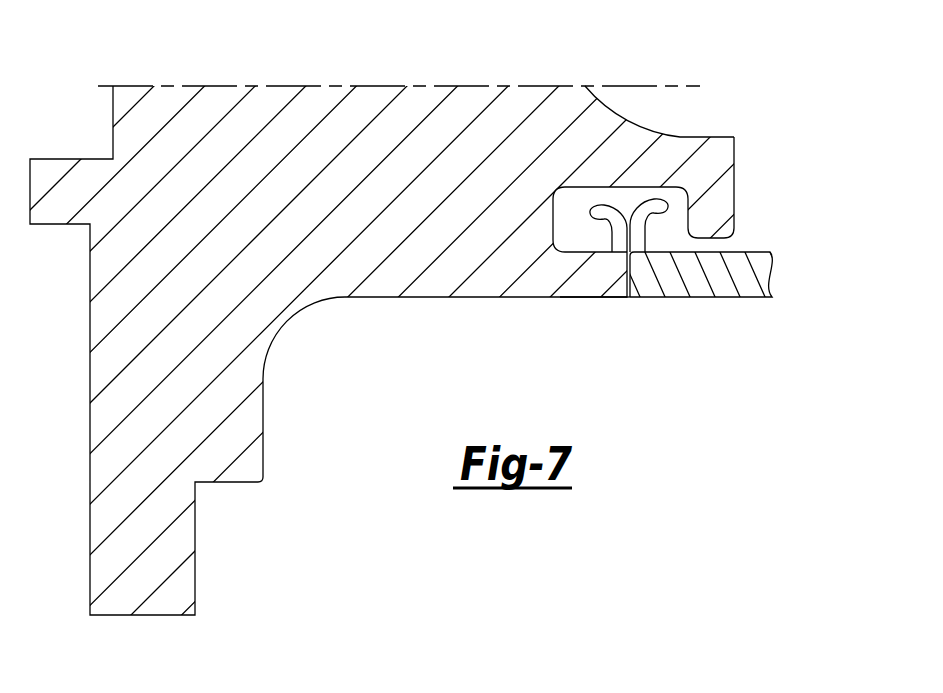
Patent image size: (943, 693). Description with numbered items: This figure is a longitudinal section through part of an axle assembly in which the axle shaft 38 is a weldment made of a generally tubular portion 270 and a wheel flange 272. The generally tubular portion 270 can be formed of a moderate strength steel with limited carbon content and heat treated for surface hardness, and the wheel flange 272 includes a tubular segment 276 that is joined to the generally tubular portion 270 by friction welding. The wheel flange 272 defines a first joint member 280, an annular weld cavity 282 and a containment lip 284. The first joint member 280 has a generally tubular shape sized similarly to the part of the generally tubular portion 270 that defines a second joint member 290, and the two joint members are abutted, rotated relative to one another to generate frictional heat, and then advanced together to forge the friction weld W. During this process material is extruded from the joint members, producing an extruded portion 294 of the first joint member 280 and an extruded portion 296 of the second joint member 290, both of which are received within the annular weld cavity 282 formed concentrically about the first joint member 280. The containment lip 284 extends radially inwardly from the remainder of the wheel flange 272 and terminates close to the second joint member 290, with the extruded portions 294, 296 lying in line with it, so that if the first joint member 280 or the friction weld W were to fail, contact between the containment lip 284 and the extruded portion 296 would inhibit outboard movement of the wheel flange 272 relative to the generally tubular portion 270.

The axle shaft 38 is at (471, 314).
The generally tubular portion 270 is at (718, 282).
The wheel flange 272 is at (155, 118).
The tubular segment 276 is at (533, 282).
The first joint member 280 is at (603, 282).
The annular weld cavity 282 is at (668, 193).
The containment lip 284 is at (717, 215).
The second joint member 290 is at (648, 282).
The extruded portion of the first joint member 294 is at (605, 210).
The extruded portion of the second joint member 296 is at (648, 202).
The friction weld W is at (627, 297).